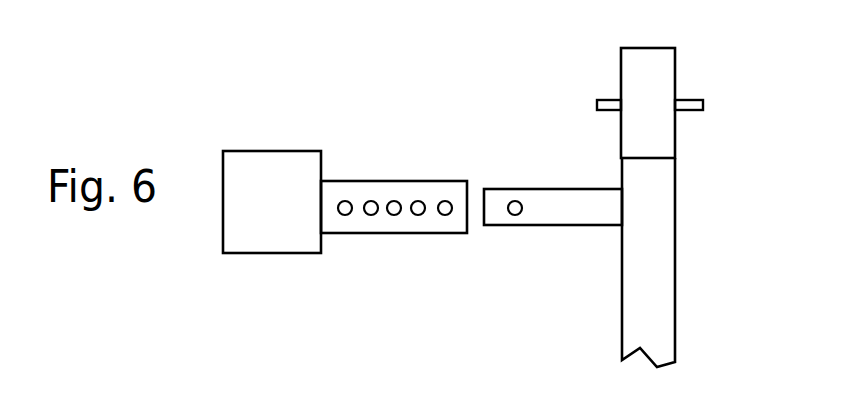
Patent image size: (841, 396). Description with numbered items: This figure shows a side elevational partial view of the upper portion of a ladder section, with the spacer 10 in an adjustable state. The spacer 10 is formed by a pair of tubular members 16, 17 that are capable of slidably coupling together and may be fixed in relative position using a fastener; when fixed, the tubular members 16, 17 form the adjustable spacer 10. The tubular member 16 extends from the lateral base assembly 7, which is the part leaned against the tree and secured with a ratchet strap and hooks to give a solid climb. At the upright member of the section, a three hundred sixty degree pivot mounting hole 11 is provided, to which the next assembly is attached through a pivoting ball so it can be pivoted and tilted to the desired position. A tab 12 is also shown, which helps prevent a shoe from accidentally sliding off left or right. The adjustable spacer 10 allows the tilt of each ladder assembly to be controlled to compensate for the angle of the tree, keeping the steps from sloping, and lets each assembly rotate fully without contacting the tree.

The lateral base assembly 7 is at (313, 167).
The spacer 10 is at (450, 253).
The 360 degree pivot mounting hole 11 is at (603, 102).
The tab 12 is at (667, 85).
The tubular member 16 is at (378, 191).
The tubular member 17 is at (605, 202).